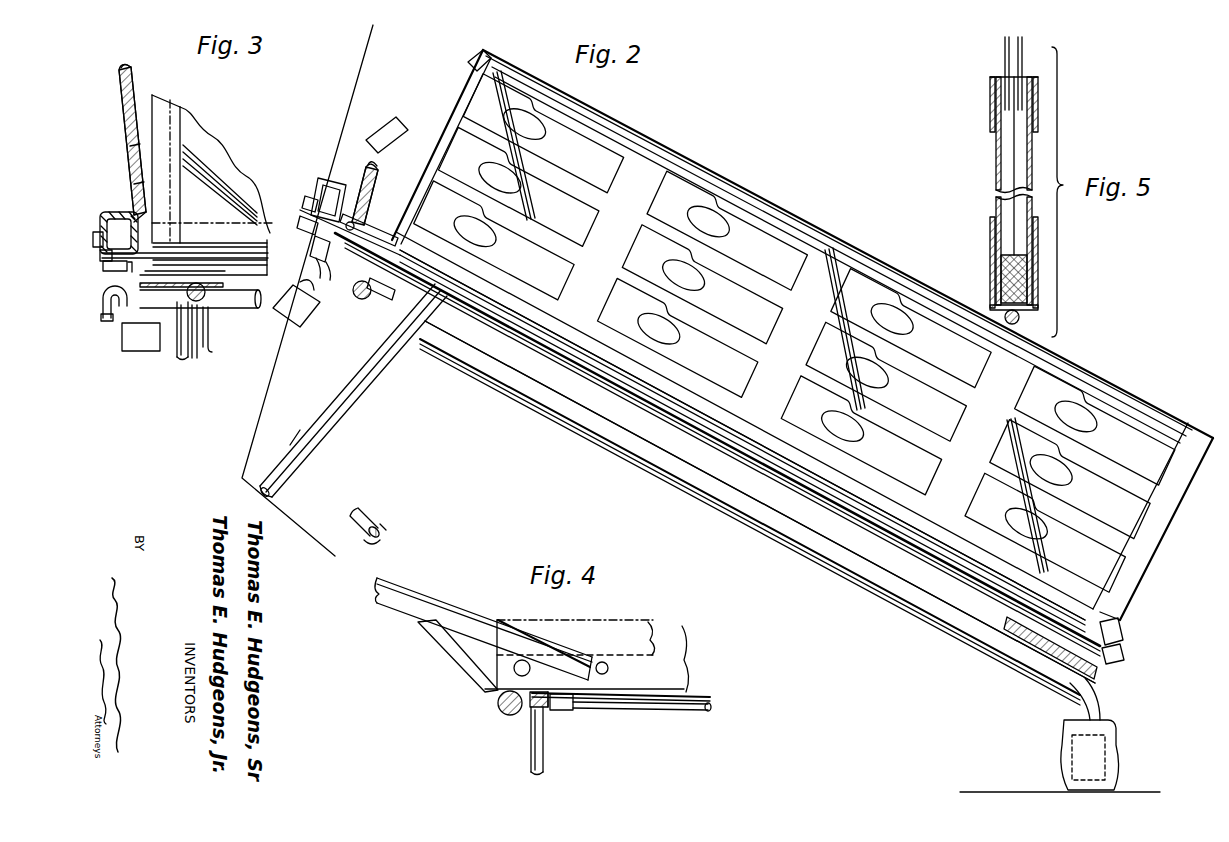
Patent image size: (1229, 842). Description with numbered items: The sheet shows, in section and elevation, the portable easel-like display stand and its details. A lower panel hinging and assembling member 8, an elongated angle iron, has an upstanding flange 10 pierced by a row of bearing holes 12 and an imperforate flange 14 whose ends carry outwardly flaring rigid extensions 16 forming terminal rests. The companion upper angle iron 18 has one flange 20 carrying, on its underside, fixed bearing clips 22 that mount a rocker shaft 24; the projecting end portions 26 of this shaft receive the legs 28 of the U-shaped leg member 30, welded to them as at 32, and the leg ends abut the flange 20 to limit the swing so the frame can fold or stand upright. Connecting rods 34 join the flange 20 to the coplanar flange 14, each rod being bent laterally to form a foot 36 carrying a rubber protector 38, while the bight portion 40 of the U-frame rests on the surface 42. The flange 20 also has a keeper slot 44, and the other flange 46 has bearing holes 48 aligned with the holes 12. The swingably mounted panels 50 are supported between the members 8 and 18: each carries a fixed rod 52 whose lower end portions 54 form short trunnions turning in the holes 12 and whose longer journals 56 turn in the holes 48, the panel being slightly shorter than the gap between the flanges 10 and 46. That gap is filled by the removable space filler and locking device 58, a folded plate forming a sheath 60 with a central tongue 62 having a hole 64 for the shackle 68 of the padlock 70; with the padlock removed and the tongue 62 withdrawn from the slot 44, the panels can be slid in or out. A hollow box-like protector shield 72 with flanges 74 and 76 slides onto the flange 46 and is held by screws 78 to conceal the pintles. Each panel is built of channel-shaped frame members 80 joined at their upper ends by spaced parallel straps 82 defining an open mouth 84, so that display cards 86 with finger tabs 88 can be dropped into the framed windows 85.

In FIG. 2, the lower panel hinging and assembling member 8 is at (992, 622).
In FIG. 2, the upstanding flange 10 is at (1122, 614).
In FIG. 2, the bearing holes 12 is at (1122, 632).
In FIG. 2, the imperforate flange 14 is at (1022, 641).
In FIG. 2, the rigid extensions 16 is at (1043, 590).
In FIG. 2, the upper panel hinging member 18 is at (378, 292).
In FIG. 3, the upper panel hinging member 18 is at (203, 250).
In FIG. 4, the upper panel hinging member 18 is at (697, 674).
In FIG. 2, the flange 20 is at (402, 300).
In FIG. 3, the flange 20 is at (226, 290).
In FIG. 4, the flange 20 is at (686, 690).
In FIG. 2, the bearing clips 22 is at (359, 300).
In FIG. 3, the bearing clips 22 is at (211, 320).
In FIG. 4, the bearing clips 22 is at (562, 710).
In FIG. 2, the rocker shaft 24 is at (374, 304).
In FIG. 3, the rocker shaft 24 is at (195, 340).
In FIG. 4, the rocker shaft 24 is at (690, 702).
In FIG. 4, the projecting end portions 26 is at (543, 686).
In FIG. 2, the legs 28 is at (298, 407).
In FIG. 3, the legs 28 is at (180, 342).
In FIG. 4, the legs 28 is at (538, 738).
In FIG. 2, the U-shaped leg member 30 is at (296, 445).
In FIG. 4, the welds 32 is at (530, 709).
In FIG. 2, the connecting rods 34 is at (800, 528).
In FIG. 3, the connecting rods 34 is at (227, 300).
In FIG. 4, the connecting rods 34 is at (497, 709).
In FIG. 2, the laterally bent foot 36 is at (1077, 683).
In FIG. 2, the protector 38 is at (1064, 756).
In FIG. 2, the bight portion 40 is at (376, 522).
In FIG. 2, the surface 42 is at (372, 542).
In FIG. 3, the keeper slot 44 is at (184, 274).
In FIG. 2, the flange 46 is at (316, 245).
In FIG. 3, the flange 46 is at (135, 272).
In FIG. 4, the flange 46 is at (688, 662).
In FIG. 2, the bearing holes 48 is at (354, 226).
In FIG. 4, the bearing holes 48 is at (513, 665).
In FIG. 2, the panels 50 is at (720, 172).
In FIG. 3, the panels 50 is at (195, 122).
In FIG. 4, the panels 50 is at (473, 607).
In FIG. 5, the panels 50 is at (1042, 243).
In FIG. 2, the rod 52 is at (870, 548).
In FIG. 5, the rod 52 is at (1018, 320).
In FIG. 2, the lower end portions 54 is at (1122, 652).
In FIG. 2, the journals 56 is at (302, 208).
In FIG. 3, the journals 56 is at (102, 256).
In FIG. 2, the space filler and locking device 58 is at (364, 172).
In FIG. 3, the space filler and locking device 58 is at (140, 80).
In FIG. 2, the sheath 60 is at (383, 168).
In FIG. 3, the sheath 60 is at (120, 78).
In FIG. 2, the tongue 62 is at (318, 264).
In FIG. 3, the tongue 62 is at (137, 148).
In FIG. 3, the hole 64 is at (136, 186).
In FIG. 3, the shackle 68 is at (103, 321).
In FIG. 2, the padlock 70 is at (298, 312).
In FIG. 3, the padlock 70 is at (140, 343).
In FIG. 2, the protector shield 72 is at (323, 178).
In FIG. 3, the protector shield 72 is at (99, 208).
In FIG. 2, the flange 74 is at (376, 213).
In FIG. 3, the flange 74 is at (142, 218).
In FIG. 4, the flange 74 is at (650, 640).
In FIG. 2, the flange 76 is at (300, 220).
In FIG. 3, the flange 76 is at (130, 273).
In FIG. 2, the screws 78 is at (309, 197).
In FIG. 3, the screws 78 is at (92, 245).
In FIG. 2, the channel-shaped frame members 80 is at (785, 220).
In FIG. 4, the channel-shaped frame members 80 is at (408, 602).
In FIG. 5, the channel-shaped frame members 80 is at (1002, 279).
In FIG. 2, the straps 82 is at (470, 53).
In FIG. 3, the straps 82 is at (160, 120).
In FIG. 5, the straps 82 is at (992, 105).
In FIG. 5, the open mouth 84 is at (1030, 72).
In FIG. 3, the framed windows 85 is at (223, 163).
In FIG. 5, the framed windows 85 is at (1000, 164).
In FIG. 5, the display cards 86 is at (1018, 158).
In FIG. 2, the finger tabs 88 is at (390, 127).
In FIG. 5, the finger tabs 88 is at (1005, 64).